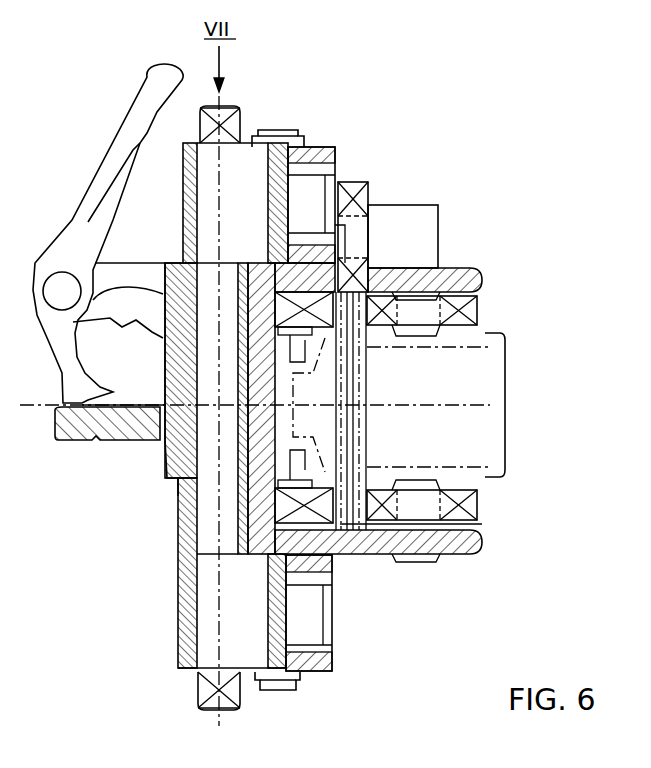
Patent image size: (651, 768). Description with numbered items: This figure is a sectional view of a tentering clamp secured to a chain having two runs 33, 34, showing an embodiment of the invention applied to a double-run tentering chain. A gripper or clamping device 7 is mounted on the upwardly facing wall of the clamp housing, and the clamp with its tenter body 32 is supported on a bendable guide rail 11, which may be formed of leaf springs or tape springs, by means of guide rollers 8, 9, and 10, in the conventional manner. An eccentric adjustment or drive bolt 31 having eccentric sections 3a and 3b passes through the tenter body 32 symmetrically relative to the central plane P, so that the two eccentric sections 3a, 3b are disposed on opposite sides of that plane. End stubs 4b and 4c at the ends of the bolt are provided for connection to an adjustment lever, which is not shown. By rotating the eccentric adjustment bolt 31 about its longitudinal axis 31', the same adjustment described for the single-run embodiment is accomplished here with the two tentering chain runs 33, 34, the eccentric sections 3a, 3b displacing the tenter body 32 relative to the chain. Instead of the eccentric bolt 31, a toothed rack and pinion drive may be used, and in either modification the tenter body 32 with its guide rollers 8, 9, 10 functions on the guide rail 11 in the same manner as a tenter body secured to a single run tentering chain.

The gripper or clamping device 7 is at (88, 205).
The end stub 4c is at (204, 127).
The eccentric section 3a is at (250, 165).
The chain run 34 is at (318, 196).
The guide roller 8 is at (362, 197).
The guide roller 9 is at (470, 310).
The guide roller 10 is at (298, 302).
The bendable guide rail 11 is at (350, 364).
The central plane P is at (420, 405).
The eccentric adjustment bolt 31 is at (163, 400).
The longitudinal axis 31' is at (174, 573).
The tenter body 32 is at (338, 546).
The eccentric section 3b is at (250, 608).
The chain run 33 is at (310, 632).
The end stub 4b is at (232, 696).